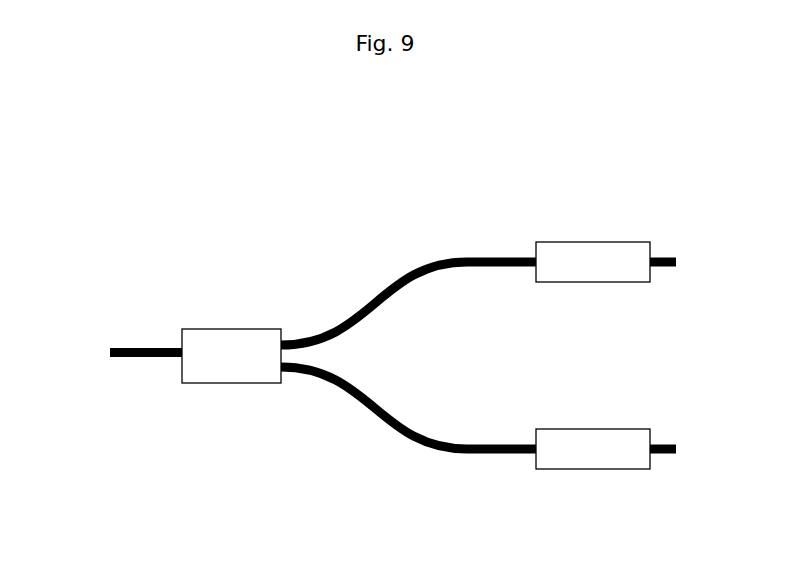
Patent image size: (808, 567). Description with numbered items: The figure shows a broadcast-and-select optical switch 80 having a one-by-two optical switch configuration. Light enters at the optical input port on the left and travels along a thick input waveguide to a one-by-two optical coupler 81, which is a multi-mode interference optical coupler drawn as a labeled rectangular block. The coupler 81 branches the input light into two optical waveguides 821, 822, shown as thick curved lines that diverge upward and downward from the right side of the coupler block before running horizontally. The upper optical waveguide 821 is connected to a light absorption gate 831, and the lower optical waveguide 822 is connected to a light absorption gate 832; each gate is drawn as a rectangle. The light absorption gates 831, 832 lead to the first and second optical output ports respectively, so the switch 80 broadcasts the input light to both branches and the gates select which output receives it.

The broadcast-and-select optical switch 80 is at (372, 178).
The 1×2 optical coupler 81 is at (228, 327).
The optical waveguide 821 is at (436, 259).
The optical waveguide 822 is at (437, 453).
The light absorption gate 831 is at (591, 241).
The light absorption gate 832 is at (591, 429).